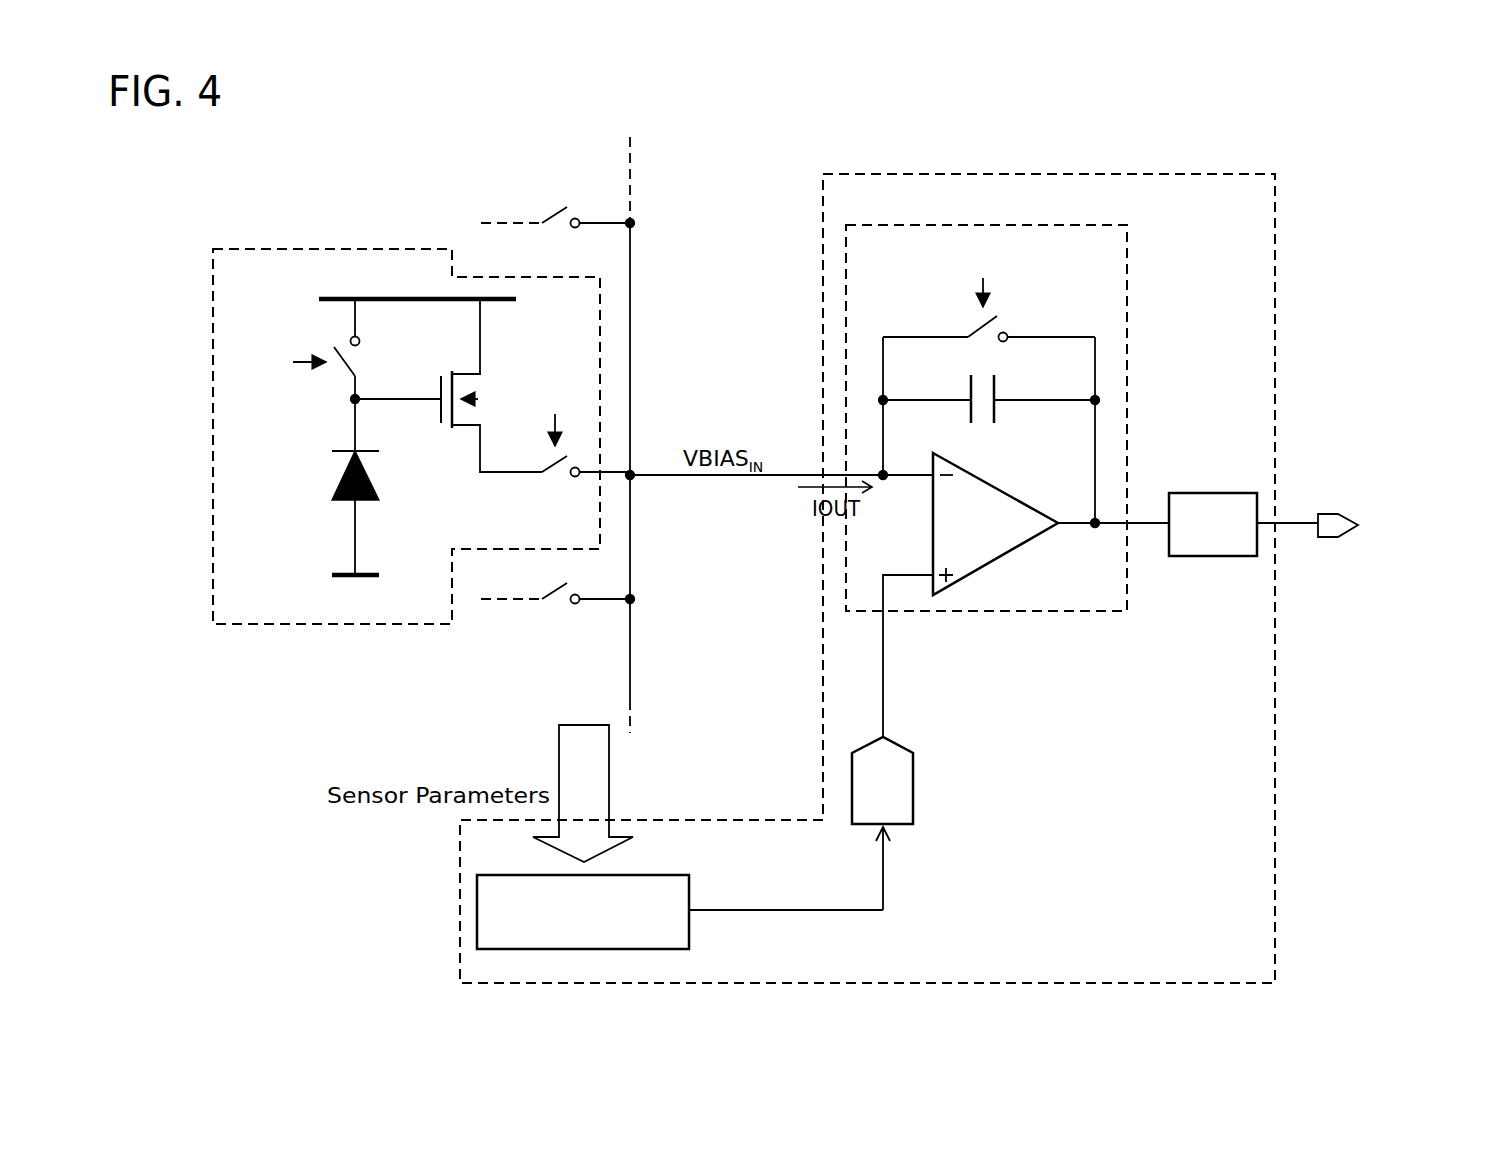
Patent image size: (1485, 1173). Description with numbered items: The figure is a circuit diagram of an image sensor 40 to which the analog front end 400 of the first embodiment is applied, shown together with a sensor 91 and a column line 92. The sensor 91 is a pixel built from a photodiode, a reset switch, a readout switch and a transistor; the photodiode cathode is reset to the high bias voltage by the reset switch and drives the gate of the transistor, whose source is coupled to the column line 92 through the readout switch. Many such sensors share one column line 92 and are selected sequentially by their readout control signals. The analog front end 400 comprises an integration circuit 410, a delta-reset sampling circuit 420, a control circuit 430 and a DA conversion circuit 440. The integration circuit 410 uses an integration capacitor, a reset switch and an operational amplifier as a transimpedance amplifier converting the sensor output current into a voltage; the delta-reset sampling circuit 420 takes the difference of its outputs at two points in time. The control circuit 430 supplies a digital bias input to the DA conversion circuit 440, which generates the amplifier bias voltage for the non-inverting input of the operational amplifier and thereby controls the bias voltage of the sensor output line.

The image sensor 40 is at (658, 122).
The sensor 91 is at (234, 249).
The column line 92 is at (630, 665).
The analog front end 400 is at (848, 174).
The integration circuit 410 is at (855, 225).
The delta-reset sampling circuit 420 is at (1190, 556).
The control circuit 430 is at (689, 897).
The DA conversion circuit 440 is at (913, 788).